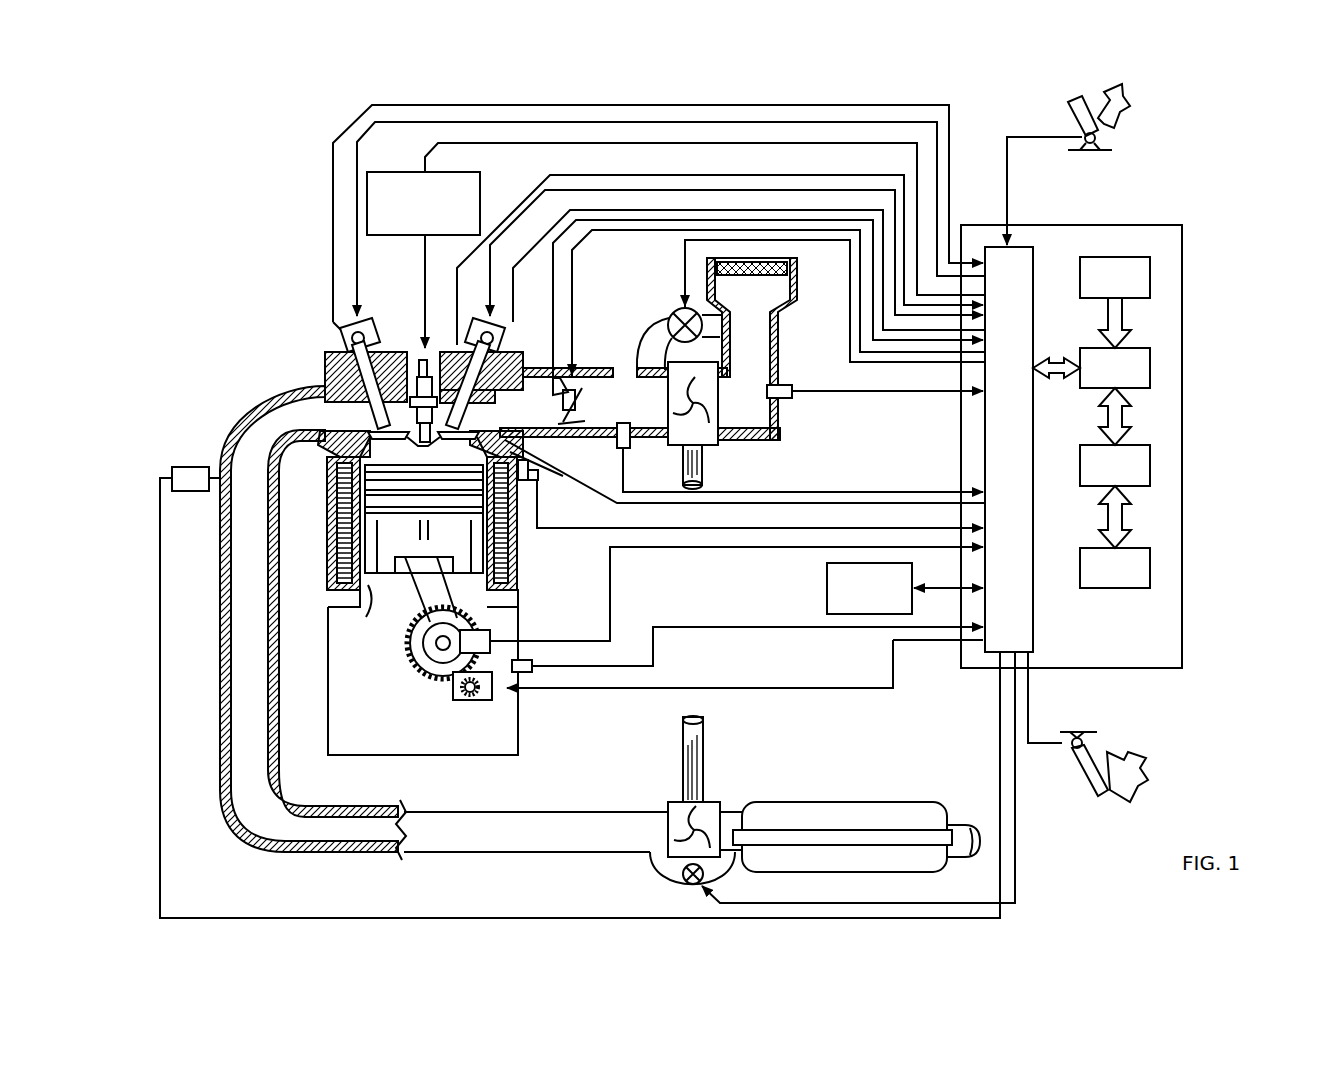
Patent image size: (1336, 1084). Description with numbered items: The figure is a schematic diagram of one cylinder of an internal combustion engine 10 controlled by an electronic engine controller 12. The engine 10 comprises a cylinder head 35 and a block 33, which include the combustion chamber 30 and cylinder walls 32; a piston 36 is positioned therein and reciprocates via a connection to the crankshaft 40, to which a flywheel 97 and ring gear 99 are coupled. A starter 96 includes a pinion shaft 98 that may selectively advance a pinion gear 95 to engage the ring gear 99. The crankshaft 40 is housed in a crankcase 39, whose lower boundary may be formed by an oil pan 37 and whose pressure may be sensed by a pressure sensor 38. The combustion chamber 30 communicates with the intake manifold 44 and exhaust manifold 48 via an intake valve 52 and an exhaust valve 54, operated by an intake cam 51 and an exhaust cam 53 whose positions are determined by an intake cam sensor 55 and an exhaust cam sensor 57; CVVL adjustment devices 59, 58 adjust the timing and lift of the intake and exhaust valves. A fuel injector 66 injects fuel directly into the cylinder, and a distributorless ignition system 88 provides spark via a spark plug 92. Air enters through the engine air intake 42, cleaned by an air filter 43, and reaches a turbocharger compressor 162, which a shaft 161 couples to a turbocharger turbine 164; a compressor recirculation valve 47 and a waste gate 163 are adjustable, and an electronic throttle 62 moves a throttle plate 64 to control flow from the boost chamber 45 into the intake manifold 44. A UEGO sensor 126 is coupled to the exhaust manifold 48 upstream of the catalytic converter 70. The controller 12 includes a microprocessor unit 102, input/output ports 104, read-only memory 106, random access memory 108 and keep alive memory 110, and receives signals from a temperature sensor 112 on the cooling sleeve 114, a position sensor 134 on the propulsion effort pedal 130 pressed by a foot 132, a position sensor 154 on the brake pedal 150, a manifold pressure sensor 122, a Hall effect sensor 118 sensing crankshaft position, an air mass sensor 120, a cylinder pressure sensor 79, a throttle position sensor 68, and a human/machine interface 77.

The internal combustion engine 10 is at (262, 305).
The electronic engine controller 12 is at (1175, 226).
The combustion chamber 30 is at (418, 475).
The cylinder walls 32 is at (370, 598).
The block 33 is at (327, 492).
The cylinder head 35 is at (320, 354).
The piston 36 is at (403, 545).
The oil pan 37 is at (520, 746).
The pressure sensor 38 is at (532, 666).
The crankcase 39 is at (343, 690).
The crankshaft 40 is at (428, 665).
The engine air intake 42 is at (632, 292).
The air filter 43 is at (762, 273).
The intake manifold 44 is at (553, 418).
The boost chamber 45 is at (645, 416).
The compressor recirculation valve 47 is at (670, 316).
The exhaust manifold 48 is at (310, 428).
The intake cam 51 is at (488, 325).
The intake valve 52 is at (470, 408).
The exhaust cam 53 is at (365, 326).
The exhaust valve 54 is at (340, 402).
The intake cam sensor 55 is at (497, 346).
The exhaust cam sensor 57 is at (346, 342).
The CVVL adjustment device 58 is at (372, 345).
The CVVL adjustment device 59 is at (503, 335).
The electronic throttle 62 is at (582, 403).
The throttle plate 64 is at (580, 419).
The fuel injector 66 is at (528, 476).
The throttle position sensor 68 is at (553, 392).
The catalytic converter 70 is at (778, 802).
The human/machine interface 77 is at (905, 588).
The cylinder pressure sensor 79 is at (452, 378).
The distributorless ignition system 88 is at (383, 172).
The spark plug 92 is at (421, 356).
The pinion gear 95 is at (470, 700).
The starter 96 is at (492, 700).
The flywheel 97 is at (412, 650).
The pinion shaft 98 is at (465, 695).
The ring gear 99 is at (440, 680).
The microprocessor unit 102 is at (1152, 368).
The input/output ports 104 is at (1035, 262).
The read-only memory 106 is at (1152, 278).
The random access memory 108 is at (1152, 466).
The keep alive memory 110 is at (1152, 568).
The temperature sensor 112 is at (537, 490).
The cooling sleeve 114 is at (505, 545).
The Hall effect sensor 118 is at (490, 638).
The air mass sensor 120 is at (792, 390).
The pressure sensor 122 is at (620, 446).
The UEGO sensor 126 is at (172, 470).
The propulsion effort pedal 130 is at (1072, 108).
The foot 132 is at (1120, 106).
The position sensor 134 is at (1098, 142).
The brake pedal 150 is at (1098, 786).
The position sensor 154 is at (1068, 741).
The shaft 161 is at (683, 463).
The turbocharger compressor 162 is at (705, 440).
The waste gate 163 is at (683, 883).
The turbocharger turbine 164 is at (668, 810).